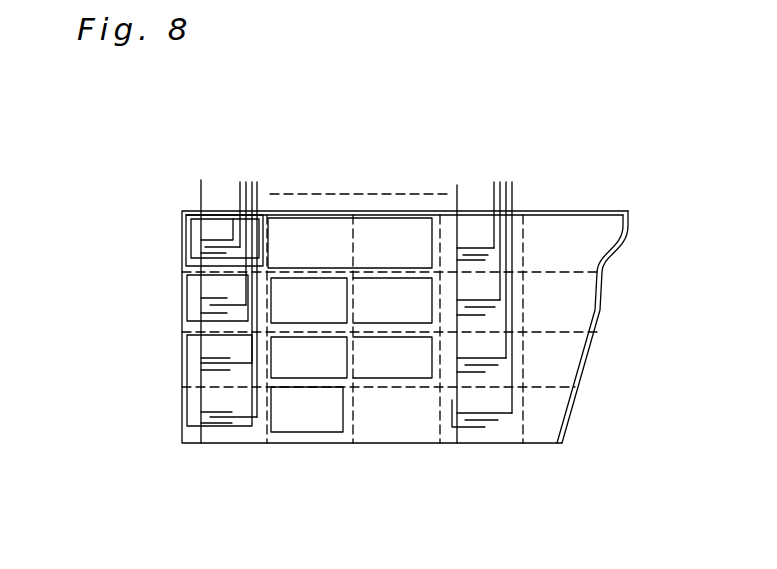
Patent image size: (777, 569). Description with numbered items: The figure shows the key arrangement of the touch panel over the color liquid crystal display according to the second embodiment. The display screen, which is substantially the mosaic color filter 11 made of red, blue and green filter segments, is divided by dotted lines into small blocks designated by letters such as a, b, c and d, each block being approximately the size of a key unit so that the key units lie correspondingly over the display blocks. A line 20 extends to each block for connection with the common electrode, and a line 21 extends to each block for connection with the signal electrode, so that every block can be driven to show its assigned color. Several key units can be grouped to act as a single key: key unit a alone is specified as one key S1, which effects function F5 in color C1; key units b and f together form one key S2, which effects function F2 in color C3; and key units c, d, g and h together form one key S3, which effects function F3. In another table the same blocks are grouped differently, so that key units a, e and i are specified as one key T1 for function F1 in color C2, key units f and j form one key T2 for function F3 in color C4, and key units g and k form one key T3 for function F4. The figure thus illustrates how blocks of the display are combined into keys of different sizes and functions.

The mosaic color filter 11 is at (530, 148).
The line 20 is at (200, 193).
The line 21 is at (257, 185).
The key S1 is at (186, 237).
The key S2 is at (187, 295).
The key S3 is at (187, 358).
The key T1 is at (372, 213).
The key T2 is at (417, 323).
The key T3 is at (370, 382).